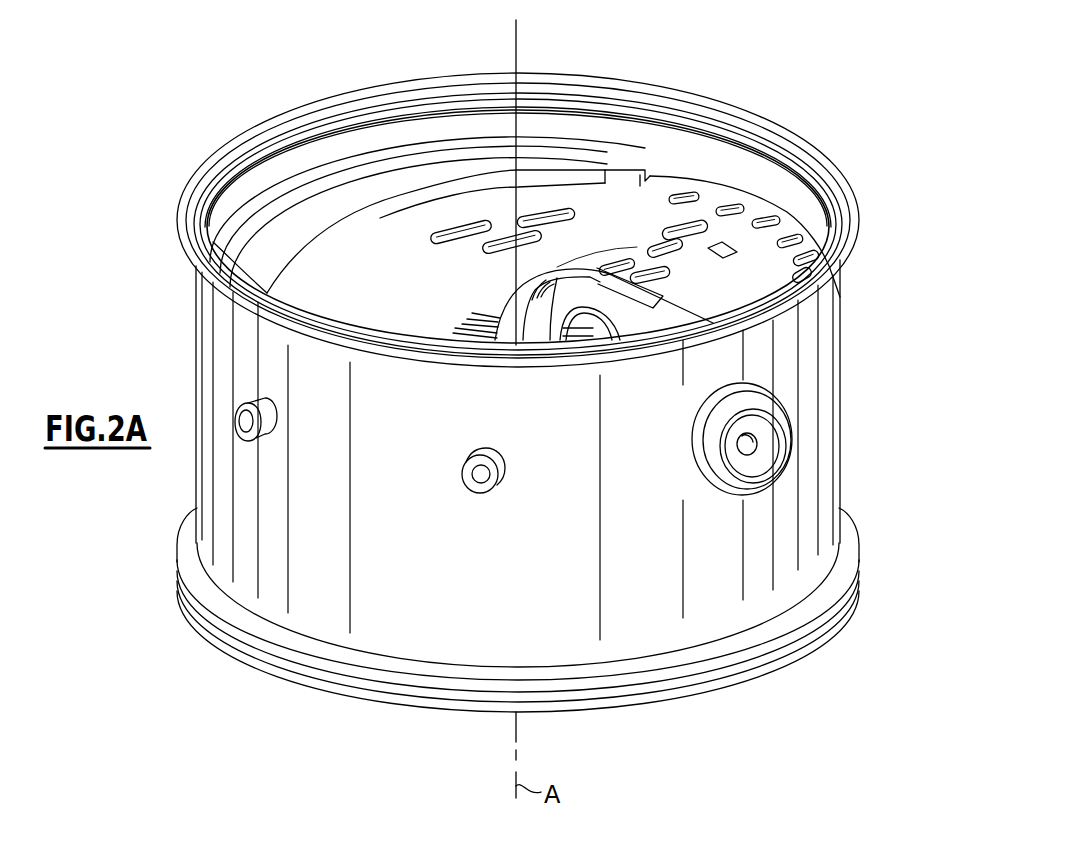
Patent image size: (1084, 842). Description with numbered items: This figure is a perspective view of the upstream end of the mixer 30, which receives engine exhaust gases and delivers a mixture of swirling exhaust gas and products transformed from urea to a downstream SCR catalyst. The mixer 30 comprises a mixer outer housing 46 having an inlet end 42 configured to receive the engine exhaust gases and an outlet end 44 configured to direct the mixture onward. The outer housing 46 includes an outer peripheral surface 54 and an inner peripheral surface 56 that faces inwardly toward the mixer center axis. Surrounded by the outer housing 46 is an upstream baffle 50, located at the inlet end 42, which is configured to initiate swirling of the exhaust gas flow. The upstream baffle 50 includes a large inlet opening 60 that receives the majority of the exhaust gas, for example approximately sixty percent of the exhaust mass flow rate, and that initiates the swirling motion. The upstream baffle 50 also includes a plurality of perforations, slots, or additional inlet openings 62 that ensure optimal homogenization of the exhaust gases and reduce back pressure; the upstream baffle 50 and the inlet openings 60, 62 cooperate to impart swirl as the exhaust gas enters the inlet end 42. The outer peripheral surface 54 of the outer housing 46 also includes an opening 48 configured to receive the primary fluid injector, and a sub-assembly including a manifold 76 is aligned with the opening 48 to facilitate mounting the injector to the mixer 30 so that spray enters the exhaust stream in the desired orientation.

The mixer 30 is at (895, 156).
The inlet end 42 is at (771, 117).
The outlet end 44 is at (775, 662).
The mixer outer housing 46 is at (190, 341).
The opening 48 is at (755, 389).
The upstream baffle 50 is at (627, 196).
The outer peripheral surface 54 is at (841, 318).
The inner peripheral surface 56 is at (692, 158).
The large inlet opening 60 is at (592, 335).
The inlet openings 62 is at (700, 228).
The manifold 76 is at (772, 454).